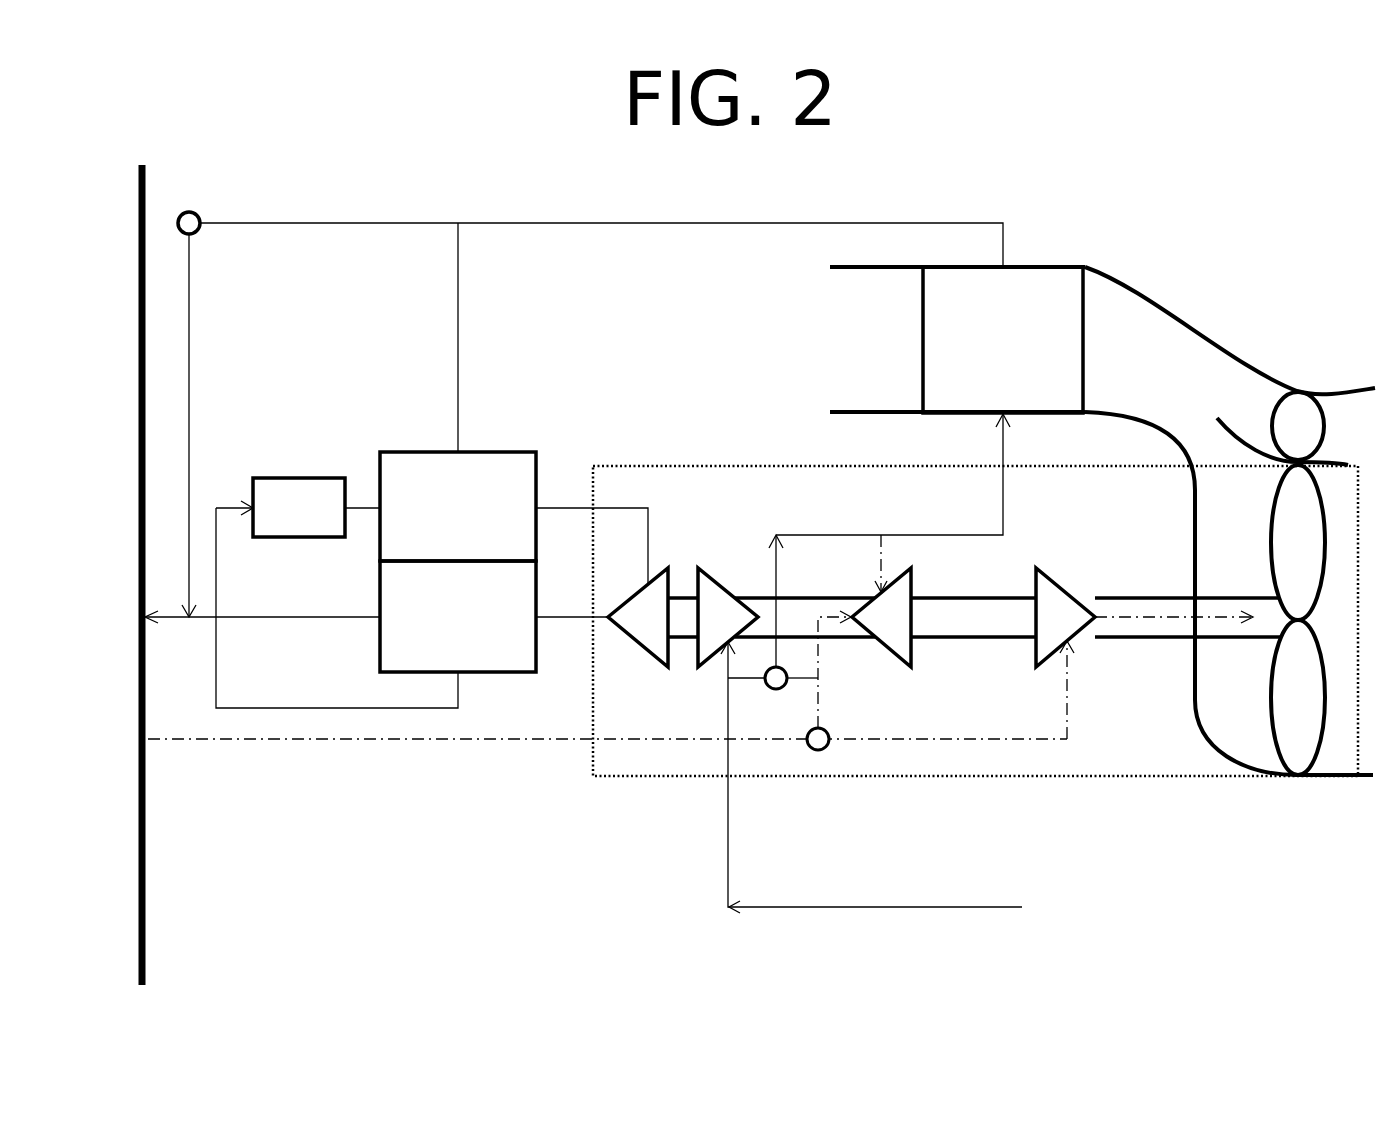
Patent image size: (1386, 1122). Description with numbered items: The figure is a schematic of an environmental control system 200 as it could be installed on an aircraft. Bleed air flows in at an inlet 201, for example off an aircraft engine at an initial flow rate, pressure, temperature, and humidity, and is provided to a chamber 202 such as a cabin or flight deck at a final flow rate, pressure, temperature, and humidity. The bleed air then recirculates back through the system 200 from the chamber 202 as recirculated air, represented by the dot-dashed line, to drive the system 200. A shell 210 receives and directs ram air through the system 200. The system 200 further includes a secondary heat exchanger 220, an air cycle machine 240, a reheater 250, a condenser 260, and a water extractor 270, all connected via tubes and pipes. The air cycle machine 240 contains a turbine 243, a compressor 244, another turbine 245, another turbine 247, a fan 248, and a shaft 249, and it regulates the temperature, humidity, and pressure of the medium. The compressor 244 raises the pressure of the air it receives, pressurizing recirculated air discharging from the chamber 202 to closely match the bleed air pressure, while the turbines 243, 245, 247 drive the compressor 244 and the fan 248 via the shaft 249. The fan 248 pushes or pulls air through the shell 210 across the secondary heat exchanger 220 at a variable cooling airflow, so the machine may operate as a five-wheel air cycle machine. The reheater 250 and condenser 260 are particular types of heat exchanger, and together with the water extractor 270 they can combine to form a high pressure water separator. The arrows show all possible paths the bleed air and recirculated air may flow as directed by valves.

The system 200 is at (1255, 152).
The inlet 201 is at (915, 789).
The chamber 202 is at (142, 537).
The shell 210 is at (1197, 274).
The secondary heat exchanger 220 is at (983, 396).
The air cycle machine 240 is at (977, 778).
The turbine 243 is at (638, 617).
The compressor 244 is at (881, 617).
The turbine 245 is at (1065, 617).
The turbine 247 is at (728, 617).
The fan 248 is at (1240, 682).
The shaft 249 is at (974, 617).
The reheater 250 is at (438, 519).
The condenser 260 is at (438, 628).
The water extractor 270 is at (279, 519).